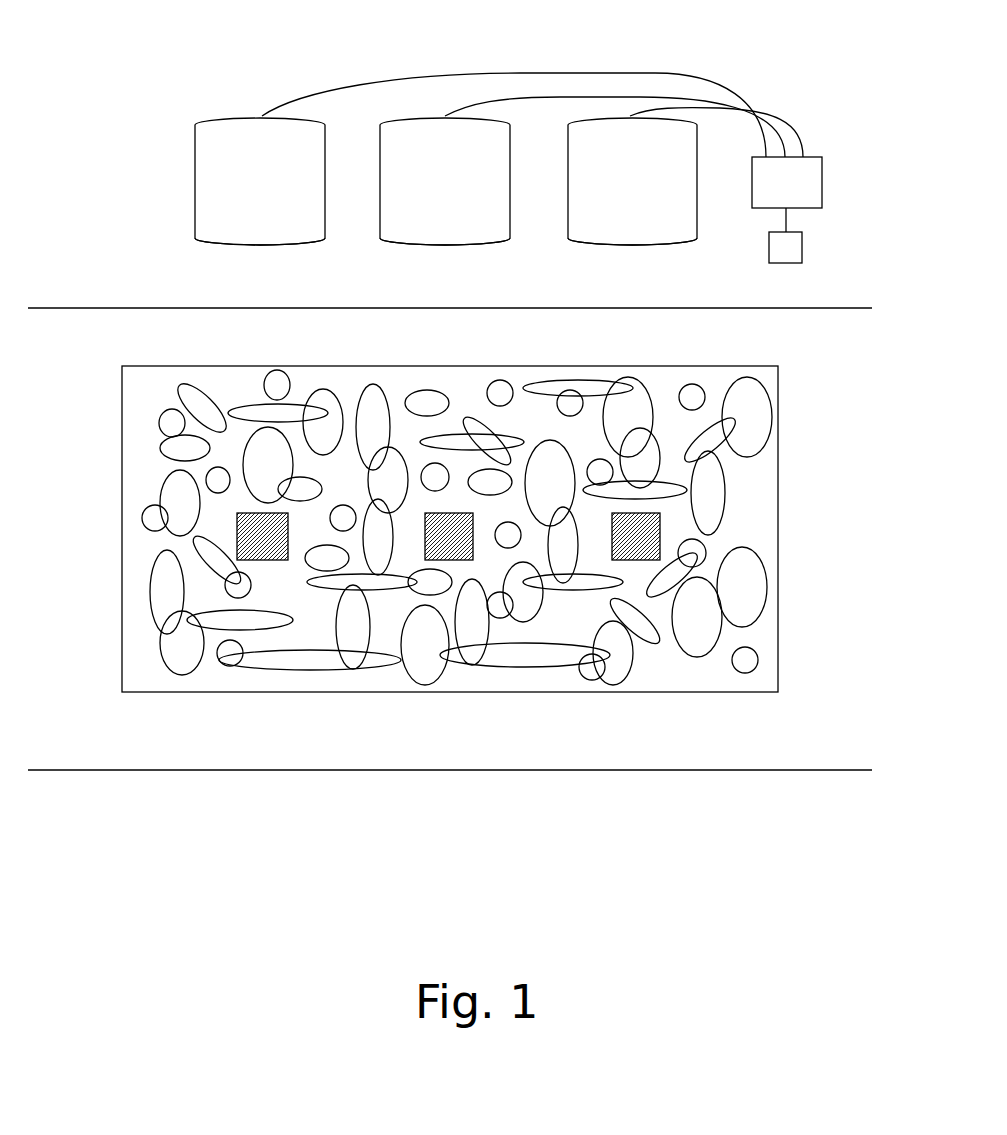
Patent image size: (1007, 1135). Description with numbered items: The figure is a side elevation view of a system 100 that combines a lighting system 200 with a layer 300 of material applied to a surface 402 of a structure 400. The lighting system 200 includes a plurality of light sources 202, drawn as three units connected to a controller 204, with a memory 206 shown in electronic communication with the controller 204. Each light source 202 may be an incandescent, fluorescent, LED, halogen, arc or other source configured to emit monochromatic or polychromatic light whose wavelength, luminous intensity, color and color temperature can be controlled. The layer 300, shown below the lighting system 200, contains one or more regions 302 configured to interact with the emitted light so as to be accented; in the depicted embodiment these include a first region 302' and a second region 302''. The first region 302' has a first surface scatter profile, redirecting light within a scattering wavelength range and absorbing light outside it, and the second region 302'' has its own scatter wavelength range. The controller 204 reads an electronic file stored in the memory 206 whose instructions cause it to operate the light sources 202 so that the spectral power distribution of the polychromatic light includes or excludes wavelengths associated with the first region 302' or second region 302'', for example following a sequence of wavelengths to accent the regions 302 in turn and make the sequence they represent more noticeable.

The system 100 is at (104, 75).
The lighting system 200 is at (317, 80).
The light sources 202 is at (240, 246).
The controller 204 is at (822, 175).
The memory 206 is at (802, 250).
The layer 300 is at (122, 567).
The regions 302 is at (474, 442).
The first region 302' is at (270, 674).
The second region 302'' is at (443, 675).
The structure 400 is at (58, 309).
The surface 402 is at (80, 657).